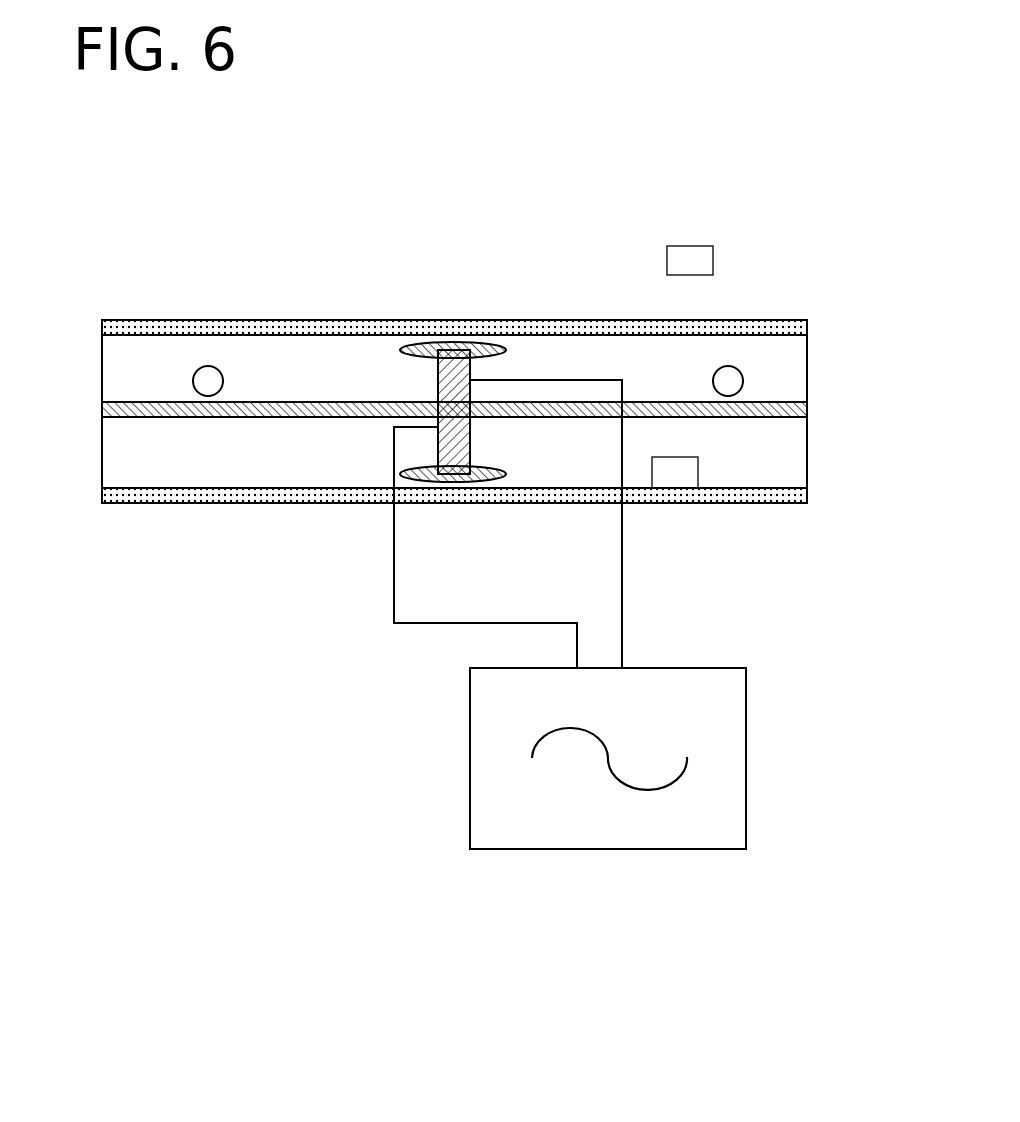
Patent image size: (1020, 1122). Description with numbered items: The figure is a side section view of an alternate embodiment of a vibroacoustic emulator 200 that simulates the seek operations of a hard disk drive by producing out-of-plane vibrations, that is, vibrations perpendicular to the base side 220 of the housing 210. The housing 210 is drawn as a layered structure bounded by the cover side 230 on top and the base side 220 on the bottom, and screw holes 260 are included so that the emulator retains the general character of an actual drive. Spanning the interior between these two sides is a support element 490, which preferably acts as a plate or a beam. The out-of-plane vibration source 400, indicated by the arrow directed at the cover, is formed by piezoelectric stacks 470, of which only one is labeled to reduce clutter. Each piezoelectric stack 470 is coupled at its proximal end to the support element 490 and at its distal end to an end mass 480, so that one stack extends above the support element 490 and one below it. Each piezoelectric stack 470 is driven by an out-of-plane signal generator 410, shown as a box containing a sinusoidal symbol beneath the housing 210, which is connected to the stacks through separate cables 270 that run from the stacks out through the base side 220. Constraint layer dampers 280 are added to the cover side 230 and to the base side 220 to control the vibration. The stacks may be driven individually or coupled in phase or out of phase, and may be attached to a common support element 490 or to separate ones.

The vibroacoustic emulator 200 is at (315, 300).
The housing 210 is at (300, 320).
The cover side 230 is at (244, 320).
The support element 490 is at (192, 418).
The base side 220 is at (202, 500).
The screw holes 260 is at (735, 367).
The constraint layer dampers 280 is at (648, 320).
The end mass 480 is at (455, 350).
The piezoelectric stack 470 is at (477, 353).
The out-of-plane vibration source 400 is at (466, 320).
The cables 270 is at (432, 625).
The out-of-plane signal generator 410 is at (470, 763).